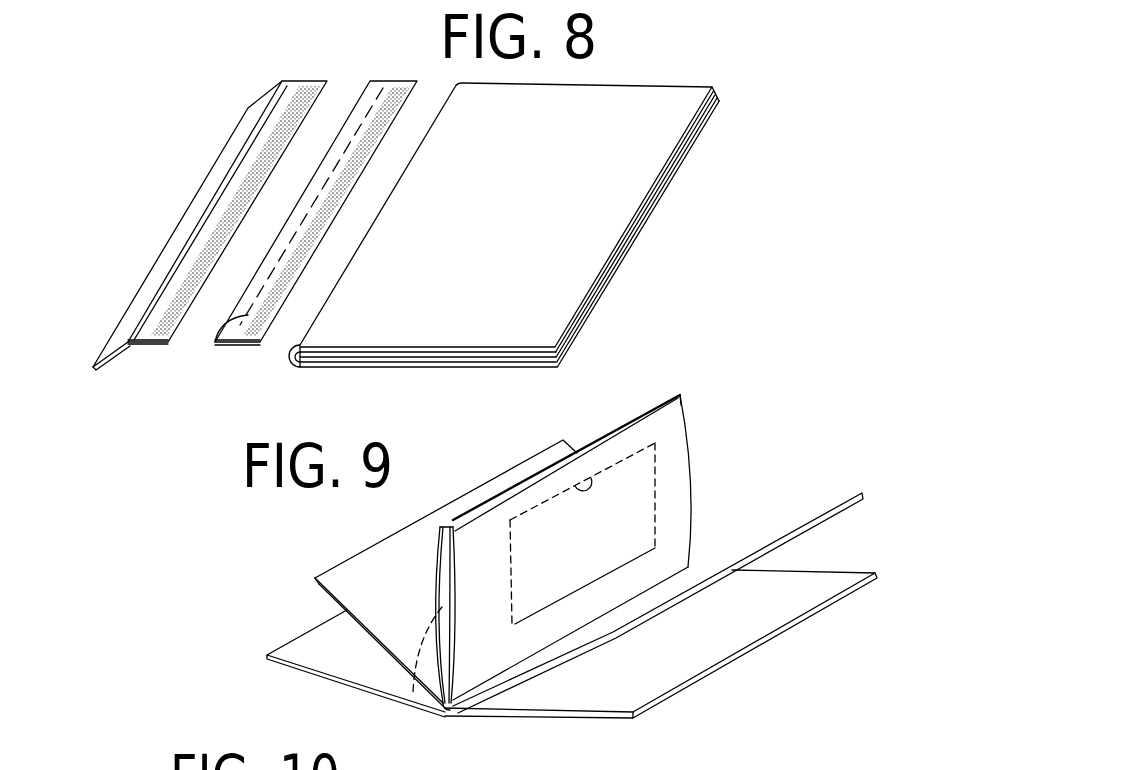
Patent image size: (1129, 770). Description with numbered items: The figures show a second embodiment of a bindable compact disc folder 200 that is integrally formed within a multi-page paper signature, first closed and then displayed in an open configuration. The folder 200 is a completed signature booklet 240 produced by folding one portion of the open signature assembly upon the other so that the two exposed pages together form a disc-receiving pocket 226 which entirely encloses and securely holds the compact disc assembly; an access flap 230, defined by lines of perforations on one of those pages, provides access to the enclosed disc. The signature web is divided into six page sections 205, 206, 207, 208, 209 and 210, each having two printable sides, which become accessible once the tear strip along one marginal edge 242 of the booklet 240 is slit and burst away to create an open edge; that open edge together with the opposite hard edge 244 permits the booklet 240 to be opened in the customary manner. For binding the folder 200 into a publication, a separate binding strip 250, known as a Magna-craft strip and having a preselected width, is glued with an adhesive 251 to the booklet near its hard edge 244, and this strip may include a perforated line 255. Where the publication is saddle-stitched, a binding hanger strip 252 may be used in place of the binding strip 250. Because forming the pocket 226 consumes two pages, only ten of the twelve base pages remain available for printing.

In FIG. 8, the bindable disc folder 200 is at (473, 228).
In FIG. 9, the bindable disc folder 200 is at (558, 555).
In FIG. 9, the page section 205 is at (298, 633).
In FIG. 9, the page section 206 is at (543, 450).
In FIG. 9, the page section 207 is at (676, 394).
In FIG. 9, the page section 208 is at (693, 490).
In FIG. 9, the page section 209 is at (831, 506).
In FIG. 9, the page section 210 is at (742, 653).
In FIG. 9, the disc-receiving pocket 226 is at (412, 696).
In FIG. 9, the access flap 230 is at (614, 548).
In FIG. 8, the signature booklet 240 is at (473, 248).
In FIG. 9, the signature booklet 240 is at (431, 505).
In FIG. 8, the marginal edge 242 is at (620, 260).
In FIG. 8, the hard edge 244 is at (293, 357).
In FIG. 9, the hard edge 244 is at (453, 717).
In FIG. 8, the binding strip 250 is at (375, 85).
In FIG. 8, the adhesive 251 is at (397, 92).
In FIG. 8, the binding hanger strip 252 is at (292, 87).
In FIG. 8, the perforated line 255 is at (215, 346).